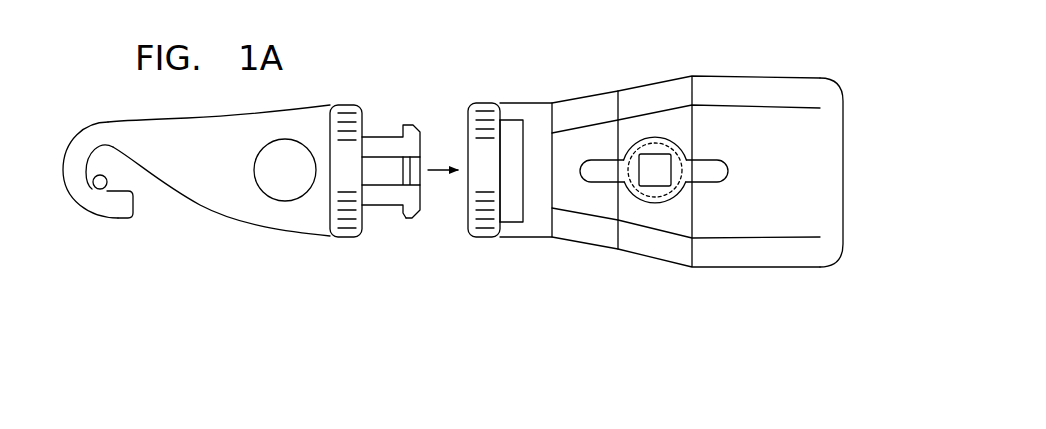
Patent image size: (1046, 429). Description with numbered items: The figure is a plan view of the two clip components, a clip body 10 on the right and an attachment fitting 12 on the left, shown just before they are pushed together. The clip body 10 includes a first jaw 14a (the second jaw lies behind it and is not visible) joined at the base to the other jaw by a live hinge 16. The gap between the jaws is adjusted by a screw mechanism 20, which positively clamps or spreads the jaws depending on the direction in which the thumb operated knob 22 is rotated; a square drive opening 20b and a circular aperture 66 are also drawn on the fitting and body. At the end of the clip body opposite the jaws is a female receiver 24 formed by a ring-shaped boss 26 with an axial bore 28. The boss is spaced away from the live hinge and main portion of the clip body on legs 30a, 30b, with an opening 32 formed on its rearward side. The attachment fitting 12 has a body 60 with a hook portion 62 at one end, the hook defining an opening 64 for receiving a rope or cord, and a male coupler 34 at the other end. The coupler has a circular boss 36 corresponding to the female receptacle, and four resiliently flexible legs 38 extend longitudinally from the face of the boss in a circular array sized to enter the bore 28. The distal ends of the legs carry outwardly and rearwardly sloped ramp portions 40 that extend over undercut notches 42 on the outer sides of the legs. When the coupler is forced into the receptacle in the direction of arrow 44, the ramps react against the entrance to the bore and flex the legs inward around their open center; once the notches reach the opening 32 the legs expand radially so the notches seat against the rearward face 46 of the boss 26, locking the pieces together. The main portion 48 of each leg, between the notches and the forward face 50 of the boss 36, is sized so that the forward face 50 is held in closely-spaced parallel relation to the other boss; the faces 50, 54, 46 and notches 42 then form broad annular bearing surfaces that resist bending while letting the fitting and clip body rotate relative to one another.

The clip body 10 is at (647, 56).
The attachment fitting 12 is at (200, 226).
The first jaw 14a is at (843, 173).
The live hinge 16 is at (548, 240).
The screw mechanism 20 is at (674, 209).
The square drive opening 20b is at (650, 188).
The thumb operated knob 22 is at (712, 162).
The female receiver 24 is at (472, 240).
The ring-shaped boss 26 is at (468, 222).
The axial bore 28 is at (470, 136).
The leg 30a is at (529, 240).
The leg 30b is at (537, 102).
The opening 32 is at (514, 134).
The male coupler 34 is at (343, 102).
The circular boss 36 is at (336, 238).
The resiliently flexible legs 38 is at (378, 173).
The ramp portions 40 is at (419, 212).
The undercut notches 42 is at (400, 212).
The arrow 44 is at (437, 168).
The rearward face 46 is at (500, 188).
The main portion 48 is at (370, 136).
The forward face 50 is at (364, 226).
The face 54 is at (468, 162).
The body 60 is at (196, 164).
The hook portion 62 is at (64, 180).
The opening 64 is at (103, 183).
The aperture 66 is at (288, 145).